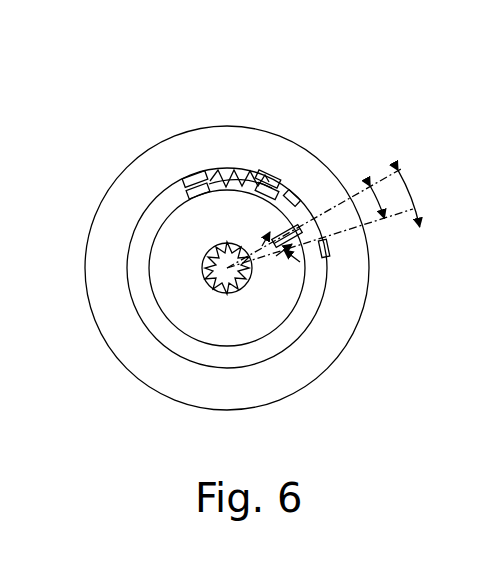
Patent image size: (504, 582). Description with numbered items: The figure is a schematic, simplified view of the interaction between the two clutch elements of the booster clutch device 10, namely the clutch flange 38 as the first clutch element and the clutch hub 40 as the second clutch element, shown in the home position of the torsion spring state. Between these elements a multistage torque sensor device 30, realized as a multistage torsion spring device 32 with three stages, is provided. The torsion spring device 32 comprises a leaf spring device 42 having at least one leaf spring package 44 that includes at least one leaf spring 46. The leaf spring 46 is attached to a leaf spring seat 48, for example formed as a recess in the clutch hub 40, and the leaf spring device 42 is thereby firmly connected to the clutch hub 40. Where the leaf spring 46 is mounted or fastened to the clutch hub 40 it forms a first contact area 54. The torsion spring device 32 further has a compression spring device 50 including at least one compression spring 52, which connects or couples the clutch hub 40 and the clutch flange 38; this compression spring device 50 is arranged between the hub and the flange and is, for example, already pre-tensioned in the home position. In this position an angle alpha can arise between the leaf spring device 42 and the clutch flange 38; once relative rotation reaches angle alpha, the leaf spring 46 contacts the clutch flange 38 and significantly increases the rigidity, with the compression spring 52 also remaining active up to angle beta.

The booster clutch device 10 is at (303, 108).
The multistage torque sensor device 30 is at (245, 162).
The multistage torsion spring device 32 is at (280, 192).
The clutch flange 38 is at (305, 168).
The clutch hub 40 is at (247, 330).
The leaf spring device 42 is at (307, 215).
The leaf spring package 44 is at (266, 239).
The leaf spring 46 is at (325, 237).
The leaf spring seat 48 is at (305, 260).
The compression spring device 50 is at (190, 192).
The compression spring 52 is at (212, 170).
The first contact area 54 is at (280, 252).